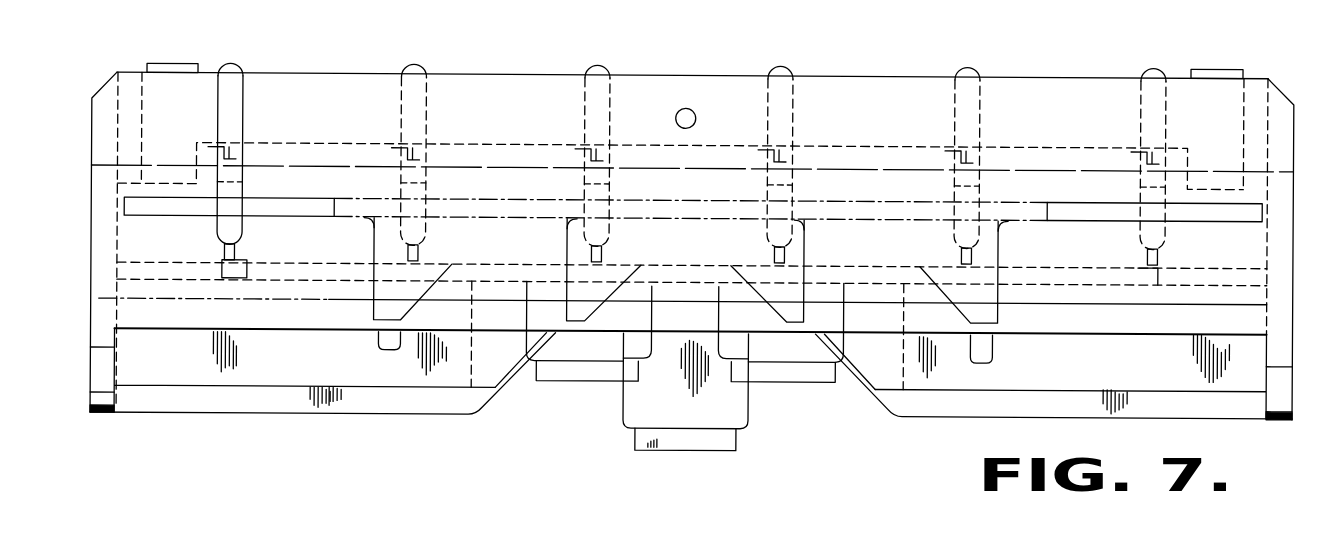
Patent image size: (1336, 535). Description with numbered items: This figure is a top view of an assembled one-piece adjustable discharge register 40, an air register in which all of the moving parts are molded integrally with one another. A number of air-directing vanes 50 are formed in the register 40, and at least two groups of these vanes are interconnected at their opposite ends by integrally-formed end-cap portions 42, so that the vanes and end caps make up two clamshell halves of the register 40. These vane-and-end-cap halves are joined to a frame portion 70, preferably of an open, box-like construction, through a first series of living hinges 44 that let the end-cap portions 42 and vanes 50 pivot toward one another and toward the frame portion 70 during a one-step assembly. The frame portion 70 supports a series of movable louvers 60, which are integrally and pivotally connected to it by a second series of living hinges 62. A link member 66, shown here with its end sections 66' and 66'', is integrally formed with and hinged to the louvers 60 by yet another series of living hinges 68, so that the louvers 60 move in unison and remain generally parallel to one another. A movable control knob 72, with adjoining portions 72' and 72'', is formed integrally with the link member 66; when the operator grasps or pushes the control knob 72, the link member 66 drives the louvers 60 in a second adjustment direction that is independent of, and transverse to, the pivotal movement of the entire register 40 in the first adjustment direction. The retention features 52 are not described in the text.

The one-piece adjustable discharge register 40 is at (1245, 57).
The end-cap portion 42 is at (92, 184).
The living hinge 44 is at (157, 63).
The air-directing vane 50 is at (170, 322).
The retention post 52 is at (383, 347).
The movable louver 60 is at (243, 105).
The living hinge 62 is at (395, 152).
The link member 66 is at (671, 230).
The first bus bar 66' is at (229, 234).
The second bus bar 66'' is at (1154, 241).
The living hinge 68 is at (248, 265).
The frame portion 70 is at (333, 110).
The control knob 72 is at (714, 397).
The first side boss 72' is at (583, 404).
The second side boss 72'' is at (808, 401).